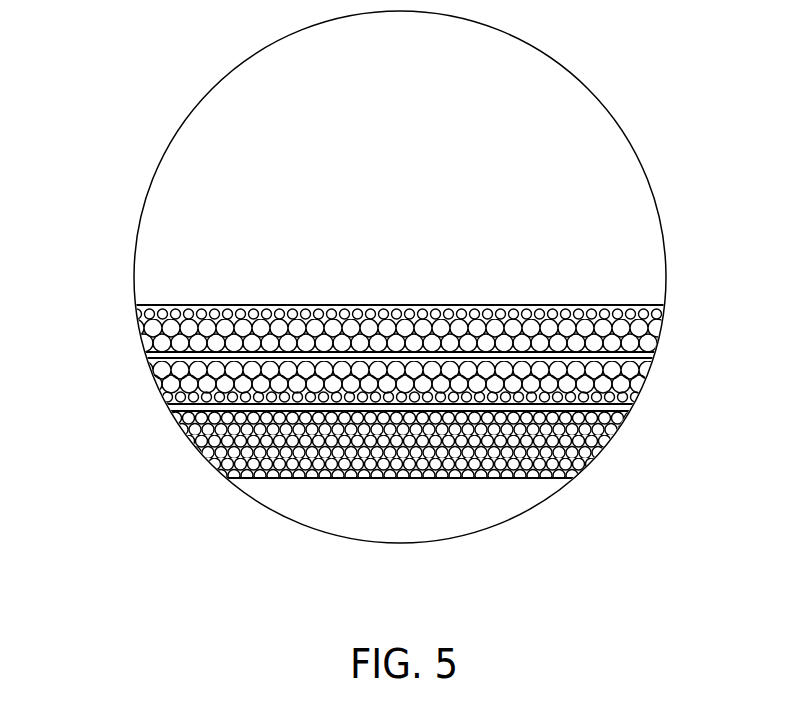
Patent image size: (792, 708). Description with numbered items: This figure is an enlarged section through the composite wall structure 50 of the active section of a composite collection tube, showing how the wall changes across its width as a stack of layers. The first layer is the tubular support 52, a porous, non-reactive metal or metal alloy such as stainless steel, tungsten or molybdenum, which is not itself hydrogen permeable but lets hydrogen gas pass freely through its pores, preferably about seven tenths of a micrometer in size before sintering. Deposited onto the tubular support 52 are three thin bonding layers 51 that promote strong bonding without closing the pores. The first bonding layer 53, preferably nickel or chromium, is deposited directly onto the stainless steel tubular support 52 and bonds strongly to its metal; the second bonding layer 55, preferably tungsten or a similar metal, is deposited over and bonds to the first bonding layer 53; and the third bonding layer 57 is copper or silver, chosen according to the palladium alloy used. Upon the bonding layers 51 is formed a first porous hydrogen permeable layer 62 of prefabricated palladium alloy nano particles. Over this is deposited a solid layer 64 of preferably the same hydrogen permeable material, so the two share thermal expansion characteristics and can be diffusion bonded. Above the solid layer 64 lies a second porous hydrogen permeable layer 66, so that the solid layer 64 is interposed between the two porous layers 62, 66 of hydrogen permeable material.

The composite wall structure 50 is at (608, 305).
The bonding layers 51 is at (157, 408).
The tubular support 52 is at (600, 457).
The first bonding layer 53 is at (630, 416).
The second bonding layer 55 is at (636, 400).
The third bonding layer 57 is at (645, 378).
The first porous hydrogen permeable layer 62 is at (168, 384).
The solid layer 64 is at (652, 354).
The second porous hydrogen permeable layer 66 is at (153, 307).